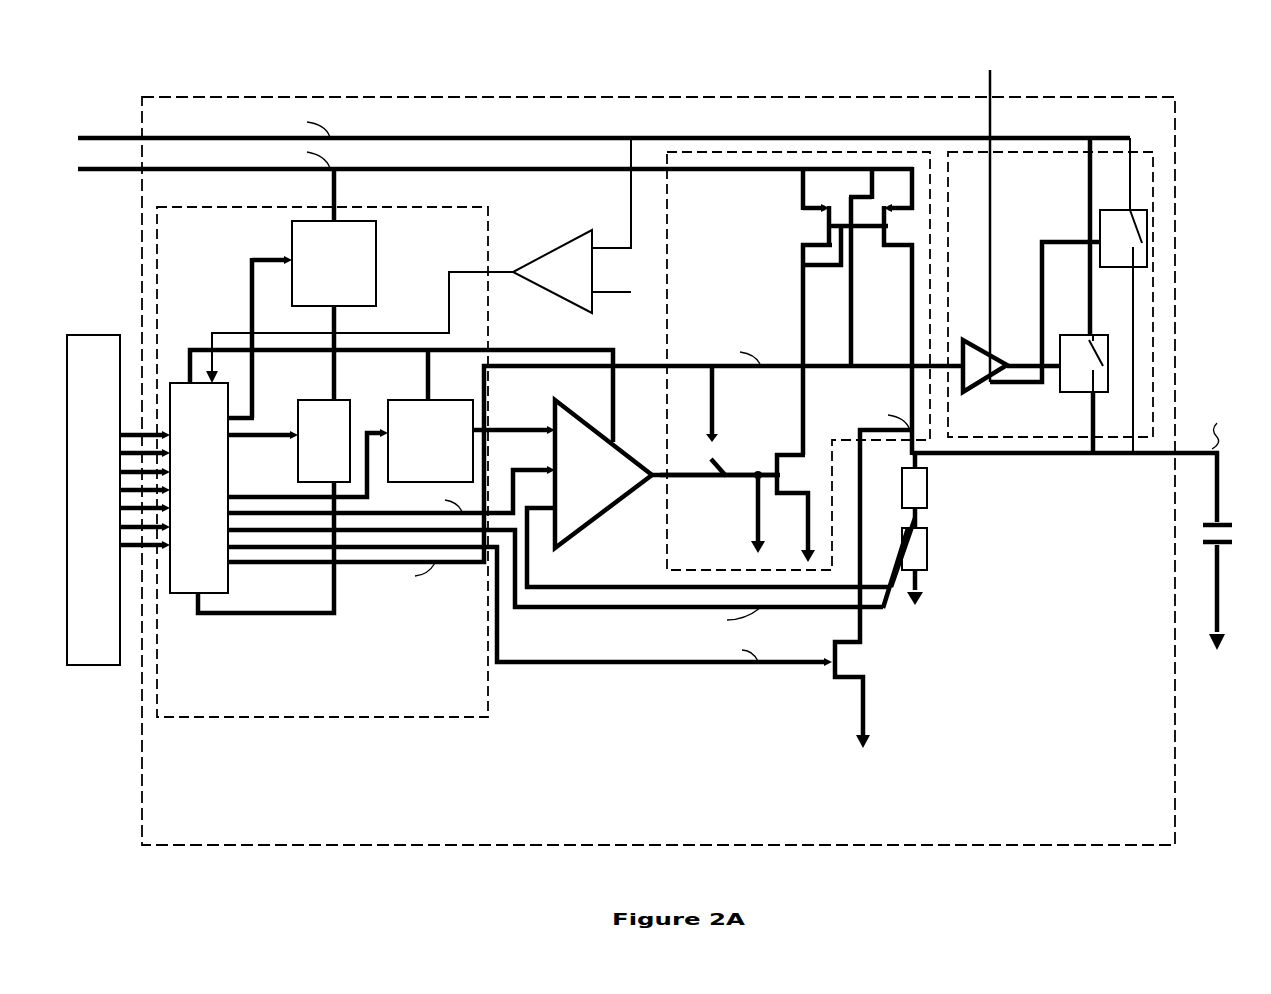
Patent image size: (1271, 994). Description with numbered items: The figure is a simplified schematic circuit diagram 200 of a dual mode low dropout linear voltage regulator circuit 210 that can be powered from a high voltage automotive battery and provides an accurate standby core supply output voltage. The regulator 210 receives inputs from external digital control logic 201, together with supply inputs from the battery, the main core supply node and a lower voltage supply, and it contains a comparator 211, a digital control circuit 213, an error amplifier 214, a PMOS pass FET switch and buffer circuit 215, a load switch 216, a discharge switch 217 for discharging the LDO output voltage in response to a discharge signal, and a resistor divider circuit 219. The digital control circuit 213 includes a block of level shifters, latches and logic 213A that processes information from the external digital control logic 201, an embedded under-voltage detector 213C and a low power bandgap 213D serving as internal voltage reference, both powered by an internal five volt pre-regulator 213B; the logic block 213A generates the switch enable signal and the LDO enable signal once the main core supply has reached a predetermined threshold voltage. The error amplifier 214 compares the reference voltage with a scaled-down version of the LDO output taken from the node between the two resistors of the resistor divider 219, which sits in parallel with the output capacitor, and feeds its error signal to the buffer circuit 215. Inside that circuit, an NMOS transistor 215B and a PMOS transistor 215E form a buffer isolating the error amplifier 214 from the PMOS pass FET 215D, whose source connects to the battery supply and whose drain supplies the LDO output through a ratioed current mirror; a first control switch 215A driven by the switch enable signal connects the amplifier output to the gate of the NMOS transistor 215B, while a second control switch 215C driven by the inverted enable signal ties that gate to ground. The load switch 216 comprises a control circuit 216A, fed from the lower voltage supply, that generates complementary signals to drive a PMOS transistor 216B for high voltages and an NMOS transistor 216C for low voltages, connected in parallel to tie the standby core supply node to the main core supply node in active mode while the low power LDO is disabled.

The simplified schematic circuit diagram 200 is at (100, 38).
The external digital control logic 201 is at (105, 367).
The LDO linear voltage regulator circuit 210 is at (475, 835).
The comparator 211 is at (582, 285).
The digital control circuit/module 213 is at (223, 281).
The block of level shifters, latches, and logic 213A is at (224, 400).
The internal 5V pre-regulator 213B is at (352, 286).
The embedded under-voltage detector 213C is at (347, 422).
The low power bandgap 213D is at (450, 462).
The error amplifier 214 is at (600, 485).
The PMOS pass FET switch and buffer circuit 215 is at (743, 286).
The first control switch SW1 215A is at (717, 462).
The NMOS M1 215B is at (806, 495).
The second control switch SW2 215C is at (752, 512).
The PMOS pass FET 215D is at (889, 266).
The PMOS M2 215E is at (780, 194).
The load switch 216 is at (1056, 227).
The control circuit 216A is at (988, 378).
The PMOS transistor 216B is at (1110, 350).
The NMOS transistor 216C is at (1147, 228).
The discharge switch 217 is at (848, 673).
The resistor divider circuit 219 is at (934, 480).